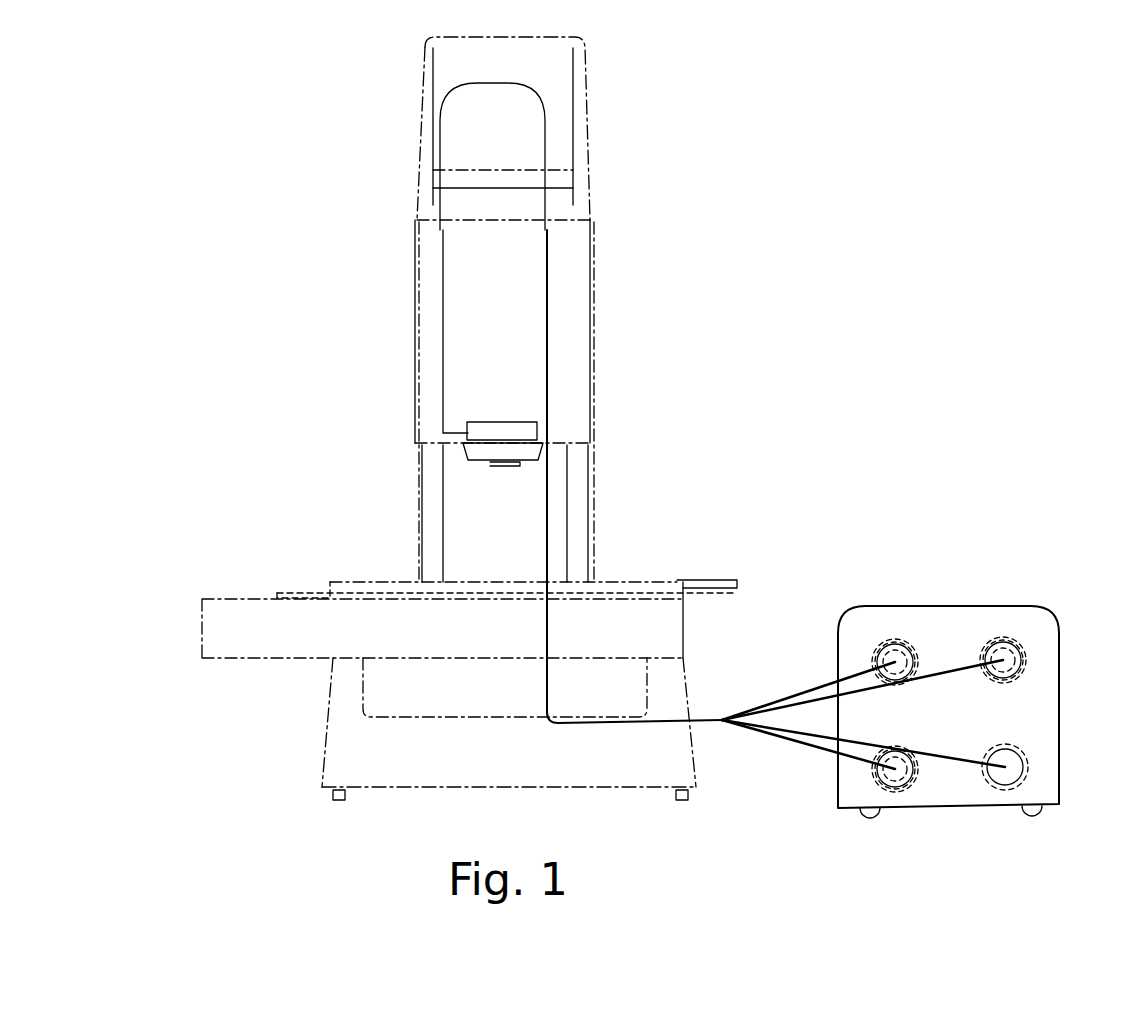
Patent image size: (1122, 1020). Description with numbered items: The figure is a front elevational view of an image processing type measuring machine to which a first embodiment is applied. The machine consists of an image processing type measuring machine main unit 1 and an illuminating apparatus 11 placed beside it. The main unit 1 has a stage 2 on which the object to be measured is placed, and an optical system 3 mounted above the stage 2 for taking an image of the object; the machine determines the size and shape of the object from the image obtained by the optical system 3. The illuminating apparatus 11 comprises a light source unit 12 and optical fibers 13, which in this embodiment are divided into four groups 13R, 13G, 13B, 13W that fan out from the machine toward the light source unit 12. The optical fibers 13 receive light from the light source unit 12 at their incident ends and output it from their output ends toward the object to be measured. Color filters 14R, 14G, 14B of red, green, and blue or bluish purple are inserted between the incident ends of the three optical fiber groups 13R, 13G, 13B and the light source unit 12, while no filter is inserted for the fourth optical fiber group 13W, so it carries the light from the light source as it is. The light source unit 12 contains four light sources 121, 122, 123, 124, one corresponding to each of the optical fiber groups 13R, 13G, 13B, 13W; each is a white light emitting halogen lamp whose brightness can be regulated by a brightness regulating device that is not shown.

The image processing type measuring machine main unit 1 is at (298, 228).
The stage 2 is at (348, 585).
The optical system 3 is at (420, 340).
The illuminating apparatus 11 is at (1068, 343).
The light source unit 12 is at (955, 615).
The optical fibers 13 is at (547, 328).
The optical fiber group 13R is at (790, 699).
The optical fiber group 13G is at (822, 694).
The optical fiber group 13B is at (778, 738).
The optical fiber group 13W is at (815, 748).
The color filter 14R is at (884, 645).
The color filter 14G is at (1026, 640).
The color filter 14B is at (893, 790).
The light source 121 is at (903, 645).
The light source 122 is at (1003, 640).
The light source 123 is at (912, 790).
The light source 124 is at (1003, 790).